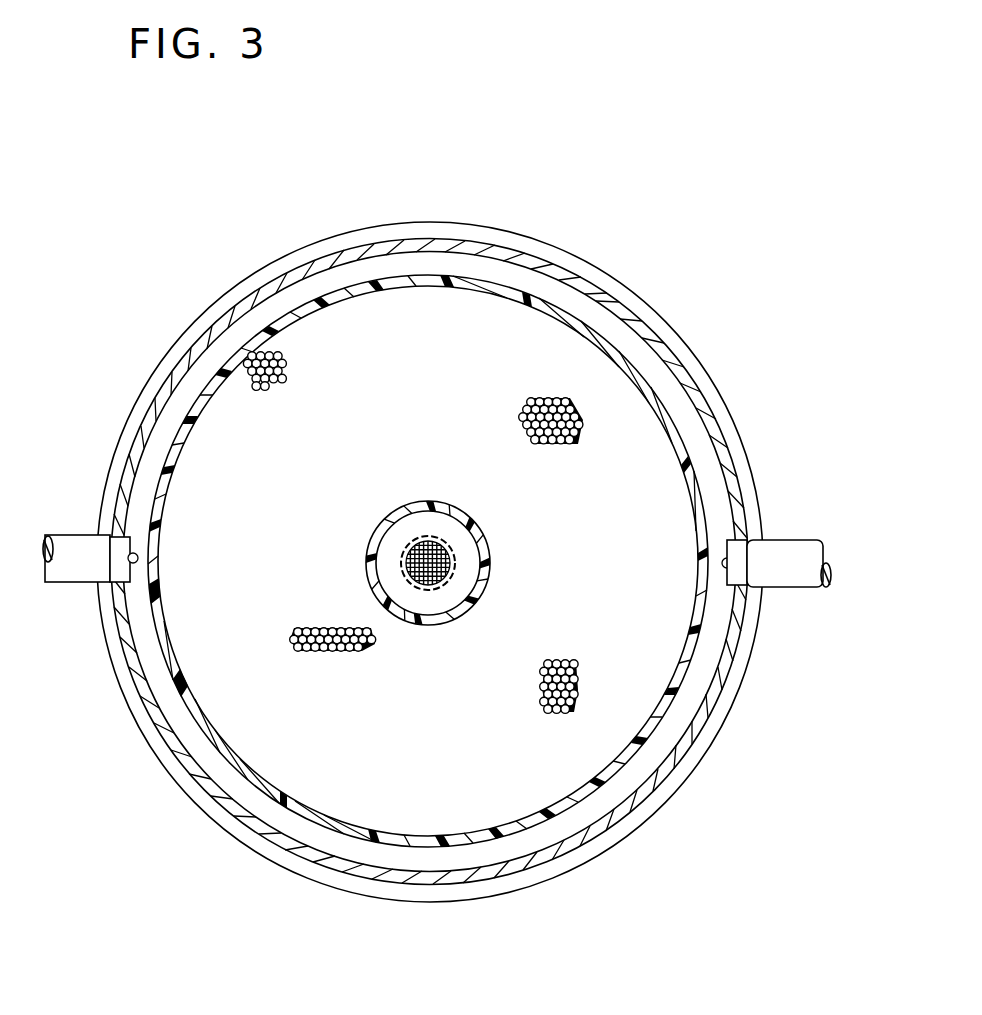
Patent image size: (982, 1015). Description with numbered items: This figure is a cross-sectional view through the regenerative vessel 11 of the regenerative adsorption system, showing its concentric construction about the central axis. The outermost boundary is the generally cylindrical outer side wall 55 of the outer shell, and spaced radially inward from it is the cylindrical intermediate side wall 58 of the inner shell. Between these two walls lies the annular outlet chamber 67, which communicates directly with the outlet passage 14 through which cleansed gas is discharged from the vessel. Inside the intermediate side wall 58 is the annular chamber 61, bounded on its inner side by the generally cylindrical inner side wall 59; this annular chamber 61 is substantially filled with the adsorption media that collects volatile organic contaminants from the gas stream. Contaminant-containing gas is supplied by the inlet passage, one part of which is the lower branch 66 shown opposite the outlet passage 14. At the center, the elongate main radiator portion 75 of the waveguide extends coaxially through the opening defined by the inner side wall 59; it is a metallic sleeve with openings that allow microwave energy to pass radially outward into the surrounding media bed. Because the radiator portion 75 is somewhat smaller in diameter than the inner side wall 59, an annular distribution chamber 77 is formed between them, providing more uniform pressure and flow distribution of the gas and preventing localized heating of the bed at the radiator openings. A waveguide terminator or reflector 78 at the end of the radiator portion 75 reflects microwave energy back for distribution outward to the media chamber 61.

The regenerative vessel 11 is at (200, 284).
The outlet passage 14 is at (802, 555).
The outer side wall 55 is at (733, 473).
The intermediate side wall 58 is at (682, 462).
The inner side wall 59 is at (478, 593).
The annular chamber 61 is at (275, 521).
The lower branch of inlet passage 66 is at (82, 550).
The annular outlet chamber 67 is at (620, 332).
The main radiator portion 75 is at (457, 557).
The annular distribution chamber 77 is at (413, 520).
The waveguide terminator or reflector 78 is at (427, 587).